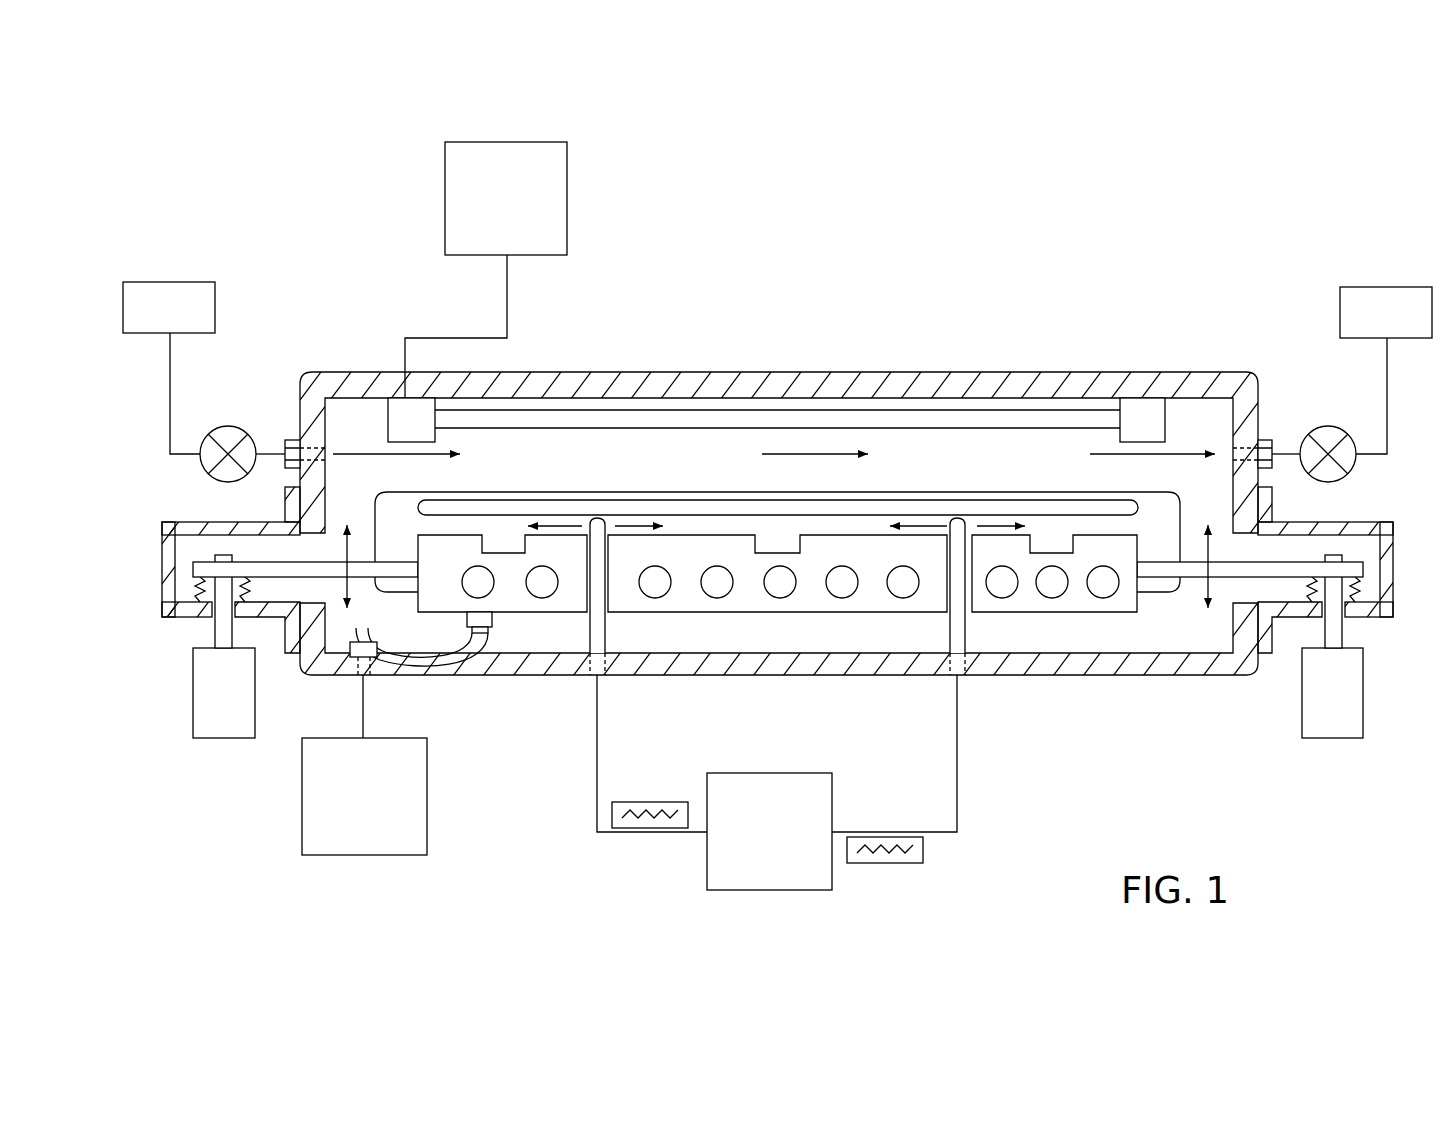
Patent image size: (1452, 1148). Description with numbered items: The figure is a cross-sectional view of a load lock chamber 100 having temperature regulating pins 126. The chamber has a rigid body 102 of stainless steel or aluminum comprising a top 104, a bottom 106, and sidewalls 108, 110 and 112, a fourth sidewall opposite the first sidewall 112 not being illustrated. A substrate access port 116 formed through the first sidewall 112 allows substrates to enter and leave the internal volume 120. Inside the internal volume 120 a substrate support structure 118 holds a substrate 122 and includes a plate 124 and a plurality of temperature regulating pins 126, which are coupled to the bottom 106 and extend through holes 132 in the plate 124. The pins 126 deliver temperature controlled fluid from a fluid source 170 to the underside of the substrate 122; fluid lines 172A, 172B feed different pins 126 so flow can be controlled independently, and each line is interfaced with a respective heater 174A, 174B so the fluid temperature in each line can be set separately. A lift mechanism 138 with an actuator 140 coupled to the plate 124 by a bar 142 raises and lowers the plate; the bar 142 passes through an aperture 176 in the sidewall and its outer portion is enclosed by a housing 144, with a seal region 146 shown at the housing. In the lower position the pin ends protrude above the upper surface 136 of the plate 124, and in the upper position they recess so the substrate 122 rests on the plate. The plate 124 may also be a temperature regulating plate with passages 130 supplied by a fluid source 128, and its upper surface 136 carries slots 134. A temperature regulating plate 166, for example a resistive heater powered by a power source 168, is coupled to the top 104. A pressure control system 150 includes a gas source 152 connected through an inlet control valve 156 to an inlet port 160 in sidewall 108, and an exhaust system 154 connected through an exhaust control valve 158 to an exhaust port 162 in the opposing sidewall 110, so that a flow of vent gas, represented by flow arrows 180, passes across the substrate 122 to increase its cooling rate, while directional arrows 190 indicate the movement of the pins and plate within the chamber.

The load lock chamber 100 is at (362, 188).
The body 102 is at (337, 365).
The top 104 is at (512, 367).
The bottom 106 is at (463, 665).
The sidewall 108 is at (290, 480).
The sidewall 110 is at (1250, 480).
The first sidewall 112 is at (1100, 447).
The substrate access port 116 is at (610, 492).
The substrate support structure 118 is at (1018, 597).
The internal volume 120 is at (938, 483).
The substrate 122 is at (555, 500).
The plate 124 is at (833, 613).
The temperature regulating pin 126 is at (590, 627).
The fluid source 128 is at (346, 841).
The passages 130 is at (762, 590).
The holes 132 is at (606, 597).
The slots 134 is at (777, 550).
The upper surface 136 is at (880, 535).
The lift mechanism 138 is at (188, 707).
The actuator 140 is at (257, 703).
The bar 142 is at (255, 562).
The housing 144 is at (165, 572).
The housing seal plate 146 is at (190, 602).
The pressure control system 150 is at (204, 319).
The gas source 152 is at (152, 323).
The exhaust system 154 is at (1368, 325).
The inlet control valve 156 is at (220, 426).
The exhaust control valve 158 is at (1358, 455).
The inlet port 160 is at (310, 448).
The exhaust port 162 is at (1240, 448).
The temperature regulating plate 166 is at (1033, 410).
The power source 168 is at (567, 198).
The fluid source 170 is at (752, 873).
The fluid line 172A is at (620, 832).
The fluid line 172B is at (945, 835).
The heater 174A is at (663, 800).
The heater 174B is at (895, 865).
The aperture 176 is at (315, 603).
The flow arrows 180 is at (360, 455).
The flow direction arrows 190 is at (640, 522).